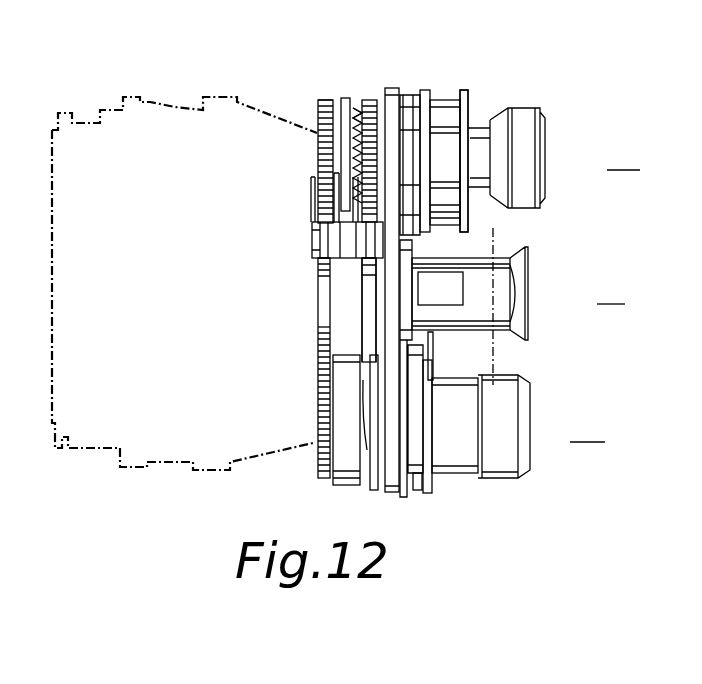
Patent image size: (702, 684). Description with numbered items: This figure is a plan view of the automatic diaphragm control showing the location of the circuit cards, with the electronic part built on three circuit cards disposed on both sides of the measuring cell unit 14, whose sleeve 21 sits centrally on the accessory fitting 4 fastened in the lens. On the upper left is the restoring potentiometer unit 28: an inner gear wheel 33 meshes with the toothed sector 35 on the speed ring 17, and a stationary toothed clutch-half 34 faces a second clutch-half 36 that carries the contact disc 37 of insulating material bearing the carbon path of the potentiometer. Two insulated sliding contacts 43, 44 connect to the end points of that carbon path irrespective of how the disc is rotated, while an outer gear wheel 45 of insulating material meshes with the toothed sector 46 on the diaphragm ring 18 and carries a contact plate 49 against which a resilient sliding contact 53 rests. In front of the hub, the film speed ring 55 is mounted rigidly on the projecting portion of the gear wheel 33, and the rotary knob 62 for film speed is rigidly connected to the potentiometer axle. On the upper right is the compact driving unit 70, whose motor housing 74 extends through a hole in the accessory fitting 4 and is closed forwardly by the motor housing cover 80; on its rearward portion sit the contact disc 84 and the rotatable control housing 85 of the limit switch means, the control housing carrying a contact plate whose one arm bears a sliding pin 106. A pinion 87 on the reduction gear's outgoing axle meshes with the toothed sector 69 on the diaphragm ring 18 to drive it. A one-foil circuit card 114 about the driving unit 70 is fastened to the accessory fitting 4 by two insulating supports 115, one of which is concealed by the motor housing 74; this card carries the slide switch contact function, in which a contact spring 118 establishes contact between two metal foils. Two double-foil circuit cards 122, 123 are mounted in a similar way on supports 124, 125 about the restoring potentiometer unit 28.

The accessory fitting 4 is at (395, 98).
The measuring cell unit 14 is at (611, 293).
The speed ring 17 is at (368, 312).
The diaphragm ring 18 is at (322, 302).
The sleeve 21 is at (498, 308).
The restoring potentiometer unit 28 is at (623, 160).
The inner gear wheel 33 is at (370, 99).
The stationary toothed clutch-half 34 is at (358, 106).
The toothed sector 35 is at (358, 279).
The second clutch-half 36 is at (357, 115).
The contact disc 37 is at (346, 97).
The sliding contact 43 is at (310, 237).
The sliding contact 44 is at (307, 223).
The outer gear wheel 45 is at (322, 99).
The toothed sector 46 is at (317, 263).
The contact plate 49 is at (317, 150).
The resilient sliding contact 53 is at (311, 180).
The film speed ring 55 is at (500, 152).
The rotary knob 62 is at (520, 172).
The toothed sector 69 is at (368, 355).
The driving unit 70 is at (587, 431).
The motor housing 74 is at (468, 453).
The motor housing cover 80 is at (507, 457).
The contact disc 84 is at (373, 470).
The control housing 85 is at (345, 463).
The pinion 87 is at (317, 407).
The sliding pin 106 is at (317, 380).
The one-foil circuit card 114 is at (430, 453).
The insulating support 115 is at (438, 345).
The contact spring 118 is at (417, 477).
The double-foil circuit card 122 is at (447, 107).
The double-foil circuit card 123 is at (470, 102).
The support 124 is at (418, 103).
The support 125 is at (453, 108).